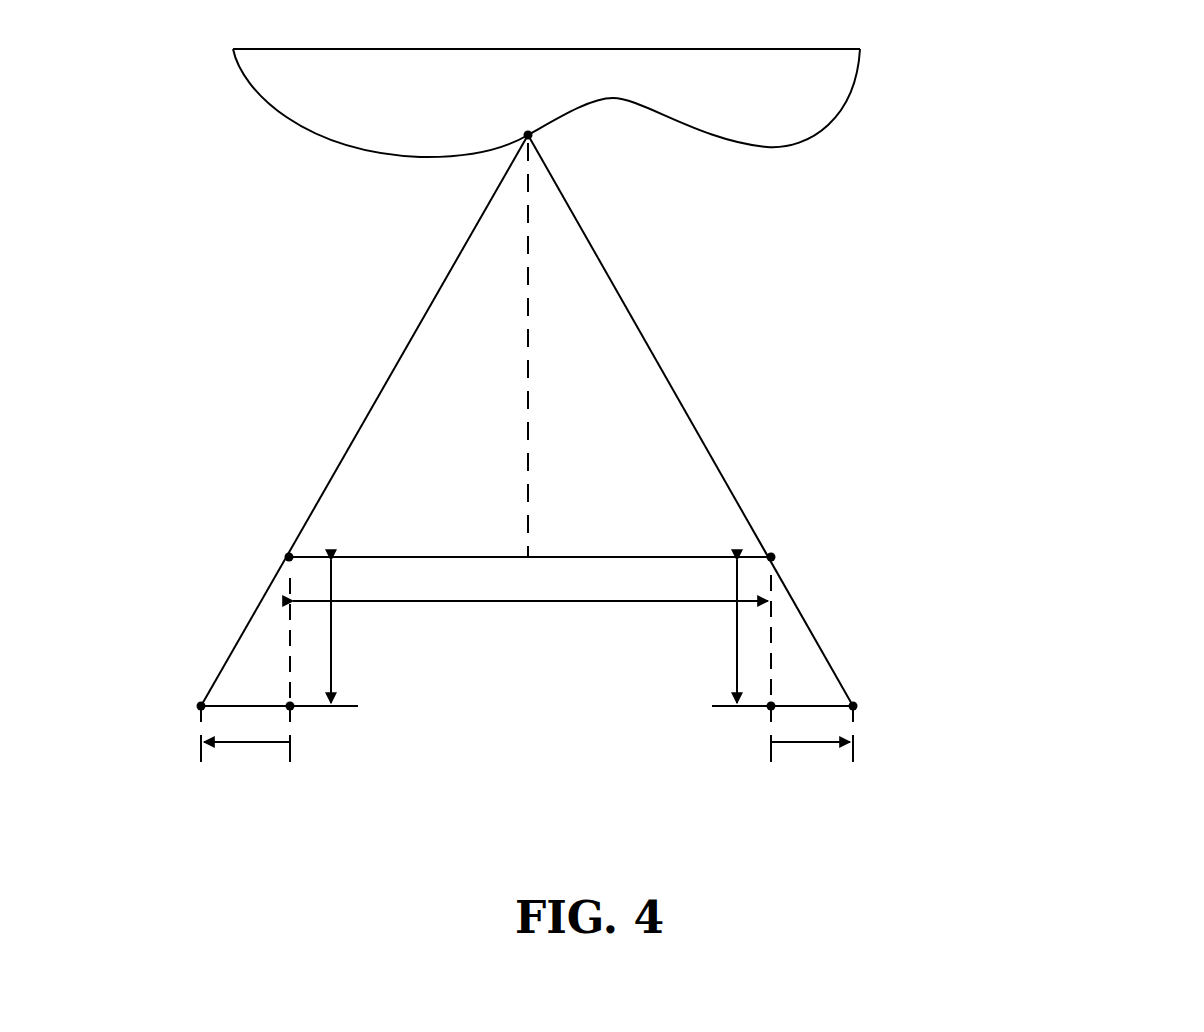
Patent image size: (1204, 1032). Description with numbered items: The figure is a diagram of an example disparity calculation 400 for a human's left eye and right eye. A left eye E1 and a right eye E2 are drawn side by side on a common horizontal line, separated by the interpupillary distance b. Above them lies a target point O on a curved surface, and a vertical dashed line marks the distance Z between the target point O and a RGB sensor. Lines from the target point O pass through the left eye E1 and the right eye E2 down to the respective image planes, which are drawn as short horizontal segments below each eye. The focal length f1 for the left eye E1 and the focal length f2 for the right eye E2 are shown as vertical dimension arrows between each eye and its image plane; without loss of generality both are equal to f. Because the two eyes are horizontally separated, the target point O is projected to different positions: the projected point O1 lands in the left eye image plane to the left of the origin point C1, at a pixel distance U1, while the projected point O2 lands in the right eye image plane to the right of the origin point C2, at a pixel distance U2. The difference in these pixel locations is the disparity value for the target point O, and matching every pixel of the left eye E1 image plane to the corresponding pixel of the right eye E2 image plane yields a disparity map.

The disparity calculation 400 is at (670, 388).
The target point O is at (527, 419).
The distance Z is at (546, 350).
The interpupillary distance b is at (530, 597).
The left eye E1 is at (274, 543).
The right eye E2 is at (781, 541).
The focal length for the left eye f1 is at (342, 631).
The focal length for the right eye f2 is at (726, 631).
The projected point in the left eye image plane O1 is at (258, 715).
The projected point in the right eye image plane O2 is at (804, 707).
The origin point in the left eye image plane C1 is at (310, 658).
The origin point in the right eye image plane C2 is at (759, 655).
The pixel distance in the left eye image plane U1 is at (245, 738).
The pixel distance in the right eye image plane U2 is at (812, 738).